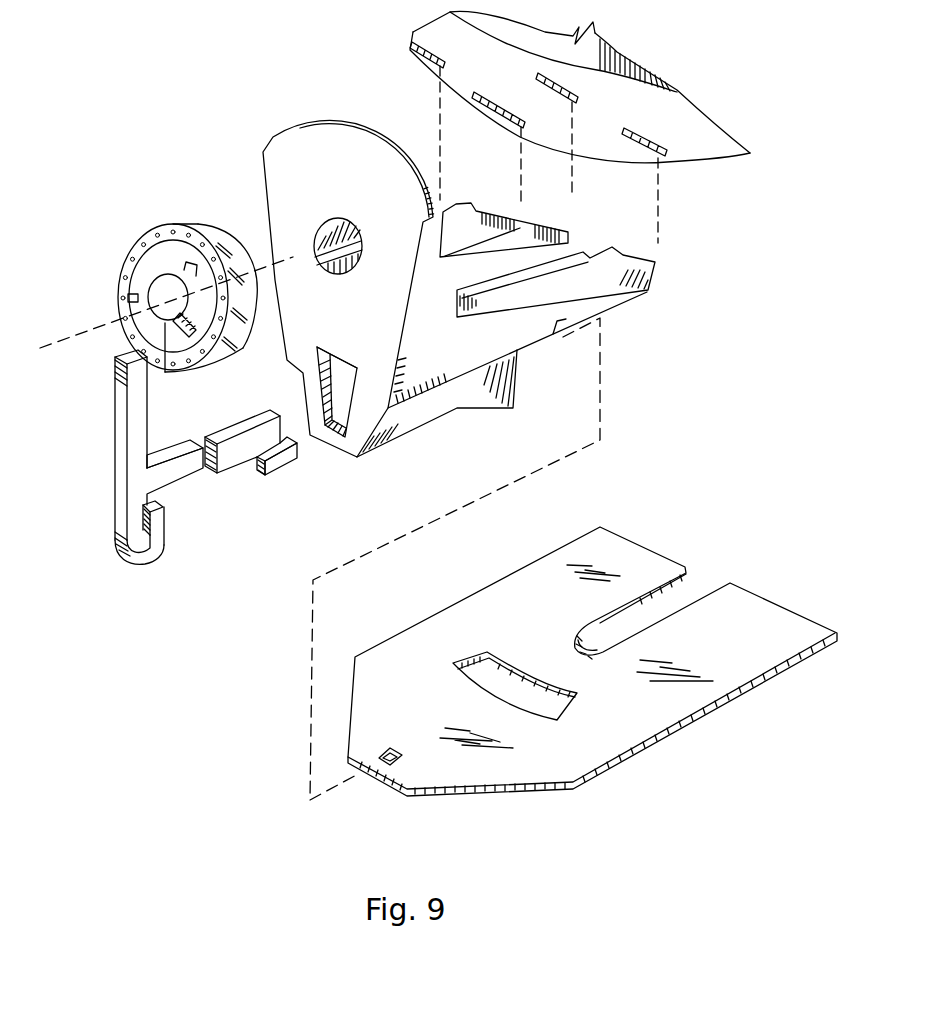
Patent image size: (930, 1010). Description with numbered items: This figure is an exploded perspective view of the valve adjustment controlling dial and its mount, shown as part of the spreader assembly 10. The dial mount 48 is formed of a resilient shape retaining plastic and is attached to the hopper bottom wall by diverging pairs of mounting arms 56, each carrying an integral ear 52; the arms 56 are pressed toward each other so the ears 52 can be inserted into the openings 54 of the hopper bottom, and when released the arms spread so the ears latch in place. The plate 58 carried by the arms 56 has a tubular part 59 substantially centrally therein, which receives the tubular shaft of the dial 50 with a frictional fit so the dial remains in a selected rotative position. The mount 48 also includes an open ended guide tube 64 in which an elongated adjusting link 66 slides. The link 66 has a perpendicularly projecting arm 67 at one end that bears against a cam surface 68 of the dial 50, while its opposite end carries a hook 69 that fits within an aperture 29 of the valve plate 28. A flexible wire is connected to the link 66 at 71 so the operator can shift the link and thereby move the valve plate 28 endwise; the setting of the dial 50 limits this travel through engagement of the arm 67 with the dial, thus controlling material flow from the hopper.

The section line / viewing direction 10 is at (337, 95).
The valve plate 28 is at (592, 669).
The aperture 29 is at (394, 748).
The dial mount 48 is at (476, 300).
The dial 50 is at (165, 280).
The ears 52 is at (568, 240).
The openings 54 is at (542, 78).
The mounting arms 56 is at (537, 322).
The plate 58 is at (336, 300).
The tubular part 59 is at (320, 232).
The guide tube 64 is at (340, 424).
The adjusting link 66 is at (222, 458).
The arm 67 is at (125, 482).
The cam surface 68 is at (142, 282).
The hook 69 is at (273, 462).
The connection point of wire to link 71 is at (152, 536).